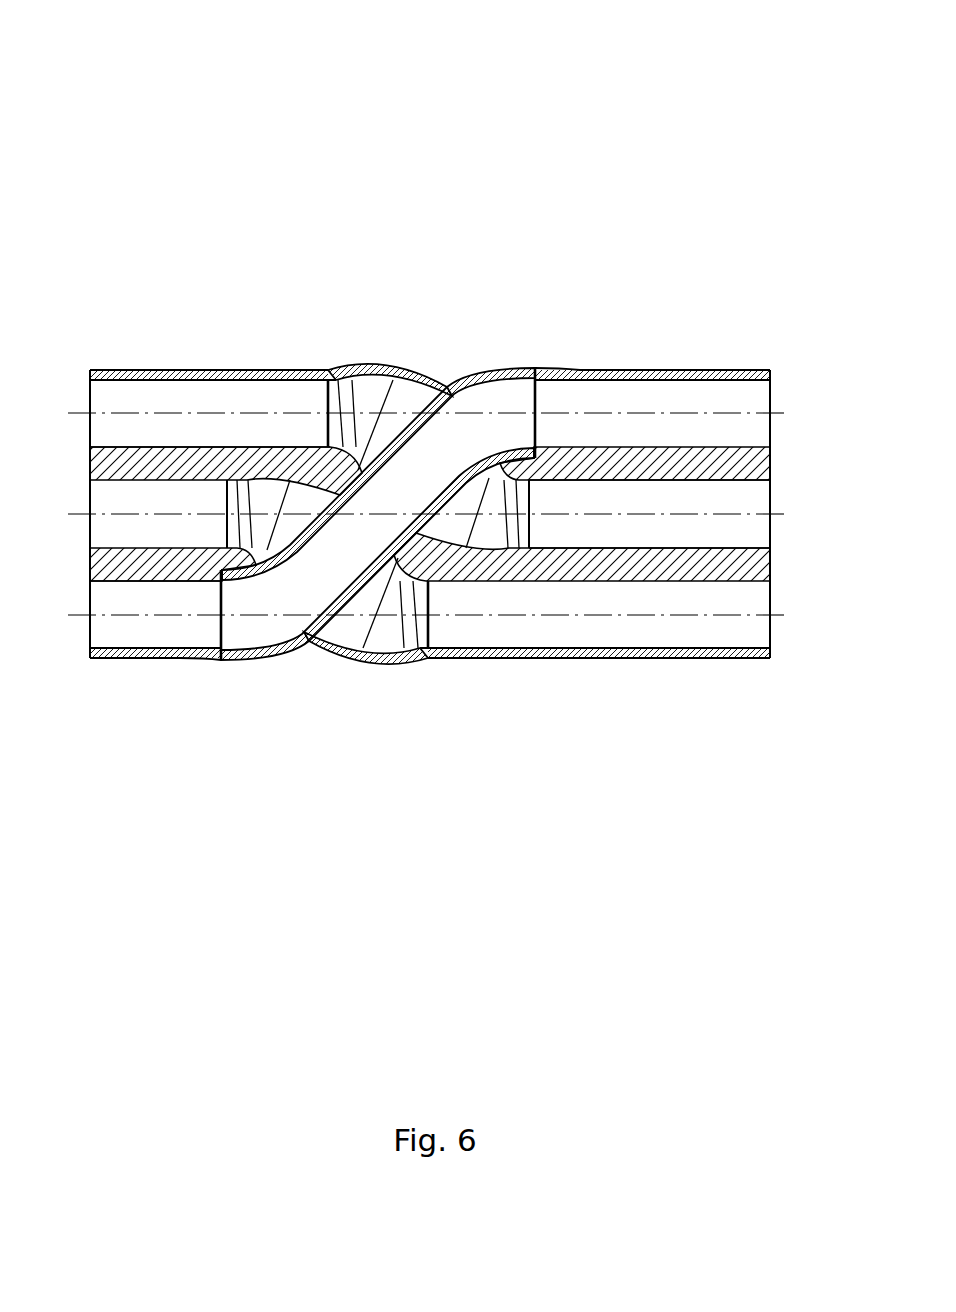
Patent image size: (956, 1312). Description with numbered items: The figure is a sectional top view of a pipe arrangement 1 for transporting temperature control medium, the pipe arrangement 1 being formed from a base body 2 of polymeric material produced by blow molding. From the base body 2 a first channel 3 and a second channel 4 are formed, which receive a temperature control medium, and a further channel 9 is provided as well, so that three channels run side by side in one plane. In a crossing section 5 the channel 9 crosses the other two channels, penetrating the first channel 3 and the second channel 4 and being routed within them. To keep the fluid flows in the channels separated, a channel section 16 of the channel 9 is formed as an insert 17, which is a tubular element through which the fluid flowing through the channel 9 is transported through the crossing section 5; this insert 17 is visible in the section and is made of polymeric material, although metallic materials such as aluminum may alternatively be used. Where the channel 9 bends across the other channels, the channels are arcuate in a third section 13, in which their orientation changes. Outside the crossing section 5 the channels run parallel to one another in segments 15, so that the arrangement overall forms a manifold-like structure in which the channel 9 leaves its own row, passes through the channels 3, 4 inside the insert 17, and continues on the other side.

The pipe arrangement 1 is at (429, 427).
The base body 2 is at (337, 658).
The first channel 3 is at (260, 385).
The second channel 4 is at (590, 485).
The crossing section 5 is at (404, 335).
The further channel 9 is at (150, 625).
The third section 13 is at (496, 410).
The segments 15 is at (143, 343).
The channel section 16 is at (396, 505).
The insert 17 is at (455, 487).